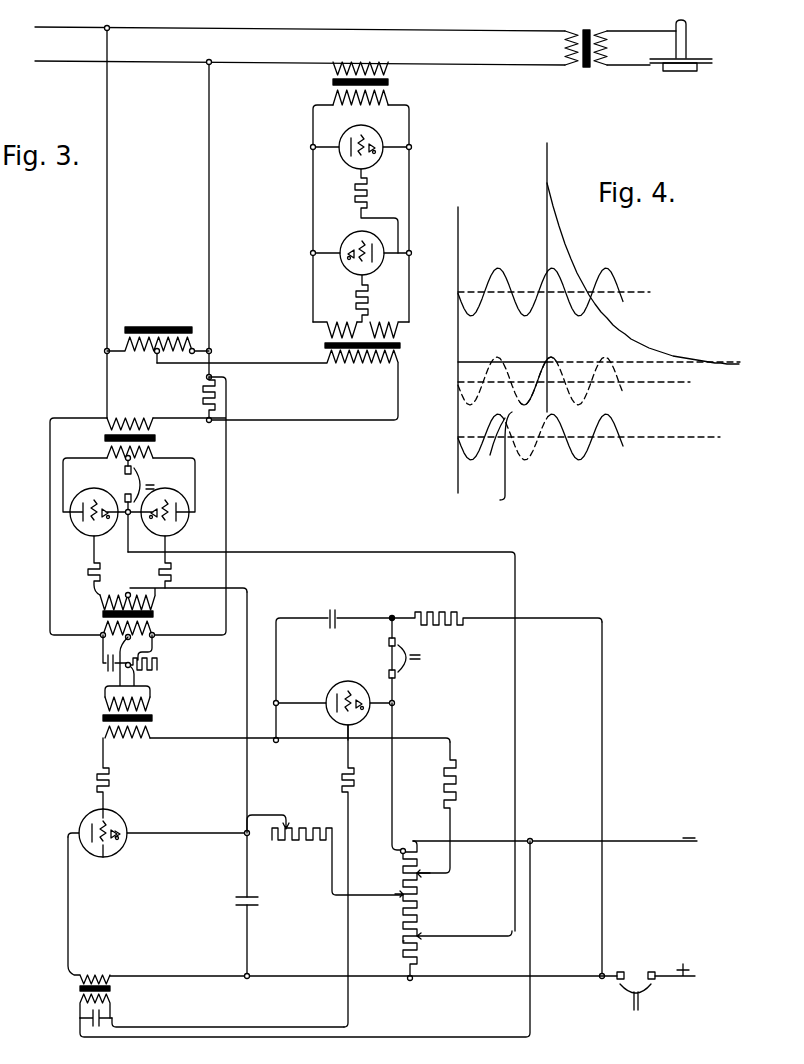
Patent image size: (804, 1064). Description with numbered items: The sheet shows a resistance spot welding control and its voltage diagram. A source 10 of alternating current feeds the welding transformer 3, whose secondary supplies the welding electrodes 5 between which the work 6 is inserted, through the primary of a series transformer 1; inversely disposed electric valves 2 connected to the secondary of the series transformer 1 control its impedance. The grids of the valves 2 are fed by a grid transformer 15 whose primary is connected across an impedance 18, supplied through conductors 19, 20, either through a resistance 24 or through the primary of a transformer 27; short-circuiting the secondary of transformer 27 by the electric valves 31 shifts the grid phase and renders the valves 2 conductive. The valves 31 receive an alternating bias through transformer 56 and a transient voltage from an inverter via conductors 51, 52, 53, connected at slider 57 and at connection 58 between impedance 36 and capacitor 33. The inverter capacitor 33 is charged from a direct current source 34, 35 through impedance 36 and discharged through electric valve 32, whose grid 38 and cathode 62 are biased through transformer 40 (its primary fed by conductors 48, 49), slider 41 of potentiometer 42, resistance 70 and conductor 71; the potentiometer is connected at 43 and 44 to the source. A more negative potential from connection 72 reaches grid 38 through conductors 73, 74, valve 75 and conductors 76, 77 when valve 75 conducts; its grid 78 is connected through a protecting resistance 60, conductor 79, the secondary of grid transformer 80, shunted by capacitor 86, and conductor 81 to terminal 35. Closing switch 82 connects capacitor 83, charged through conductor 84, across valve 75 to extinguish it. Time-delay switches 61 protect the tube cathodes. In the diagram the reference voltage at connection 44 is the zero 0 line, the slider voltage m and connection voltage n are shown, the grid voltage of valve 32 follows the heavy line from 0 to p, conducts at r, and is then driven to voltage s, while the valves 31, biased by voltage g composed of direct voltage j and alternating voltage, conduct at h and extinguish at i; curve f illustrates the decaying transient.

In FIG. 3, the source of periodic current 10 is at (46, 27).
In FIG. 3, the conductor 19 is at (110, 158).
In FIG. 3, the conductor 20 is at (207, 193).
In FIG. 3, the series transformer 1 is at (392, 83).
In FIG. 3, the electric valve 2 is at (341, 136).
In FIG. 3, the welding transformer 3 is at (586, 67).
In FIG. 3, the welding electrode 5 is at (688, 30).
In FIG. 3, the work 6 is at (705, 58).
In FIG. 3, the impedance 18 is at (157, 327).
In FIG. 3, the grid transformer 15 is at (323, 345).
In FIG. 3, the resistance 24 is at (202, 395).
In FIG. 3, the transformer 27 is at (157, 439).
In FIG. 3, the conductor 48 is at (50, 516).
In FIG. 3, the conductor 49 is at (227, 485).
In FIG. 3, the conductor 51 is at (140, 474).
In FIG. 3, the electric valve 31 is at (80, 535).
In FIG. 3, the protecting resistance 60 is at (100, 572).
In FIG. 3, the transformer 56 is at (101, 615).
In FIG. 3, the conductor 53 is at (247, 664).
In FIG. 3, the transformer 40 is at (154, 718).
In FIG. 3, the conductor 52 is at (349, 552).
In FIG. 3, the capacitor 83 is at (335, 608).
In FIG. 3, the grid transformer 80 is at (442, 610).
In FIG. 3, the switch 82 is at (412, 668).
In FIG. 3, the conductor 76 is at (294, 701).
In FIG. 3, the grid 78 is at (349, 682).
In FIG. 3, the conductor 77 is at (276, 705).
In FIG. 3, the valve 75 is at (330, 712).
In FIG. 3, the conductor 74 is at (379, 704).
In FIG. 3, the conductor 71 is at (205, 742).
In FIG. 3, the conductor 73 is at (395, 789).
In FIG. 3, the resistance 70 is at (460, 784).
In FIG. 3, the conductor 84 is at (604, 694).
In FIG. 3, the electric valve 32 is at (88, 817).
In FIG. 3, the cathode 62 is at (120, 843).
In FIG. 3, the grid 38 is at (102, 858).
In FIG. 3, the connection 58 is at (245, 832).
In FIG. 3, the impedance 36 is at (298, 843).
In FIG. 3, the capacitor 33 is at (233, 901).
In FIG. 3, the negative terminal of direct current source 35 is at (654, 840).
In FIG. 3, the connection 43 is at (411, 986).
In FIG. 3, the slider 41 is at (421, 870).
In FIG. 3, the connection 72 is at (403, 854).
In FIG. 3, the connection 44 is at (402, 897).
In FIG. 3, the slider 57 is at (421, 933).
In FIG. 3, the potentiometer 42 is at (402, 941).
In FIG. 3, the positive terminal of direct current source 34 is at (668, 975).
In FIG. 3, the switch 61 is at (658, 991).
In FIG. 3, the capacitor 86 is at (108, 1012).
In FIG. 3, the conductor 79 is at (236, 1024).
In FIG. 3, the conductor 81 is at (420, 1040).
In FIG. 4, the curve f is at (565, 244).
In FIG. 4, the conduction point h is at (546, 272).
In FIG. 4, the bias voltage g is at (612, 268).
In FIG. 4, the extinction point i is at (598, 292).
In FIG. 4, the direct current voltage j is at (648, 292).
In FIG. 4, the conduction point r is at (549, 357).
In FIG. 4, the slider voltage m is at (686, 387).
In FIG. 4, the grid voltage s is at (561, 419).
In FIG. 4, the connection voltage n is at (690, 440).
In FIG. 4, the switching point p is at (492, 444).
In FIG. 4, the starting point 0 is at (458, 437).